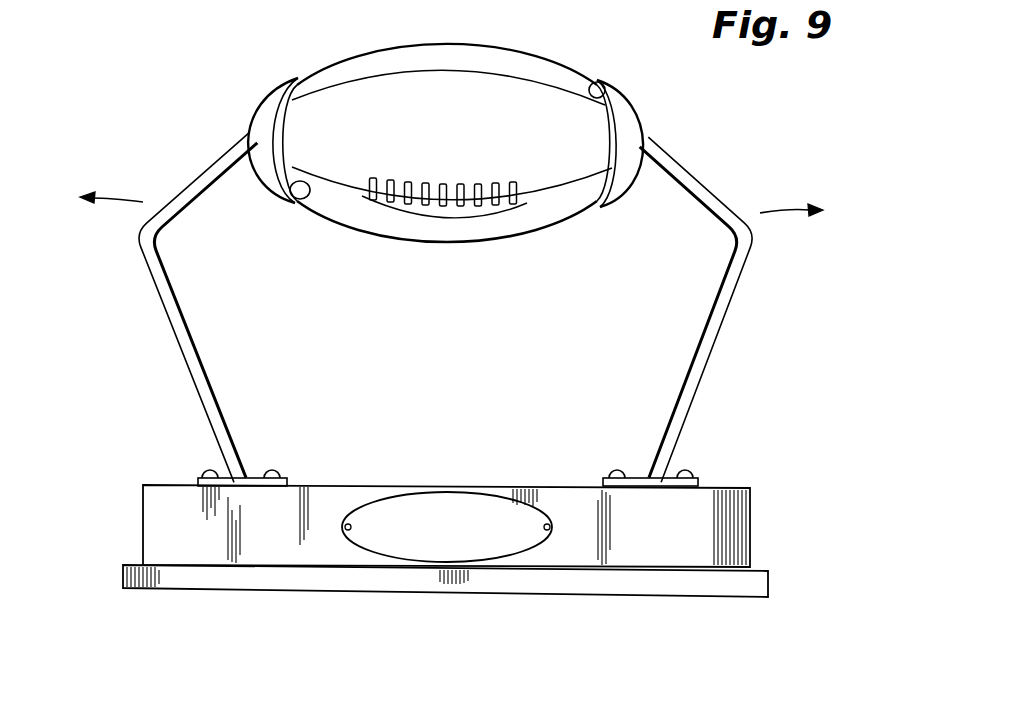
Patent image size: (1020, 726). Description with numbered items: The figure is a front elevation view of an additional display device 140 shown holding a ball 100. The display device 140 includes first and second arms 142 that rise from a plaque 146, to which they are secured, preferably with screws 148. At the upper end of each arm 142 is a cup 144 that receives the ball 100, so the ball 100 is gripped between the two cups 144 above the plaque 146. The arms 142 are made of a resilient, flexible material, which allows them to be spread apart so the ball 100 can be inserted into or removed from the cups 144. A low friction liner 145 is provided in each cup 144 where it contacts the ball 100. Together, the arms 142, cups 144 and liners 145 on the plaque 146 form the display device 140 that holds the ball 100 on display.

The ball 100 is at (546, 58).
The display device 140 is at (762, 472).
The arms 142 is at (179, 210).
The cup 144 is at (265, 113).
The low friction liner 145 is at (600, 83).
The plaque 146 is at (736, 518).
The screws 148 is at (684, 472).